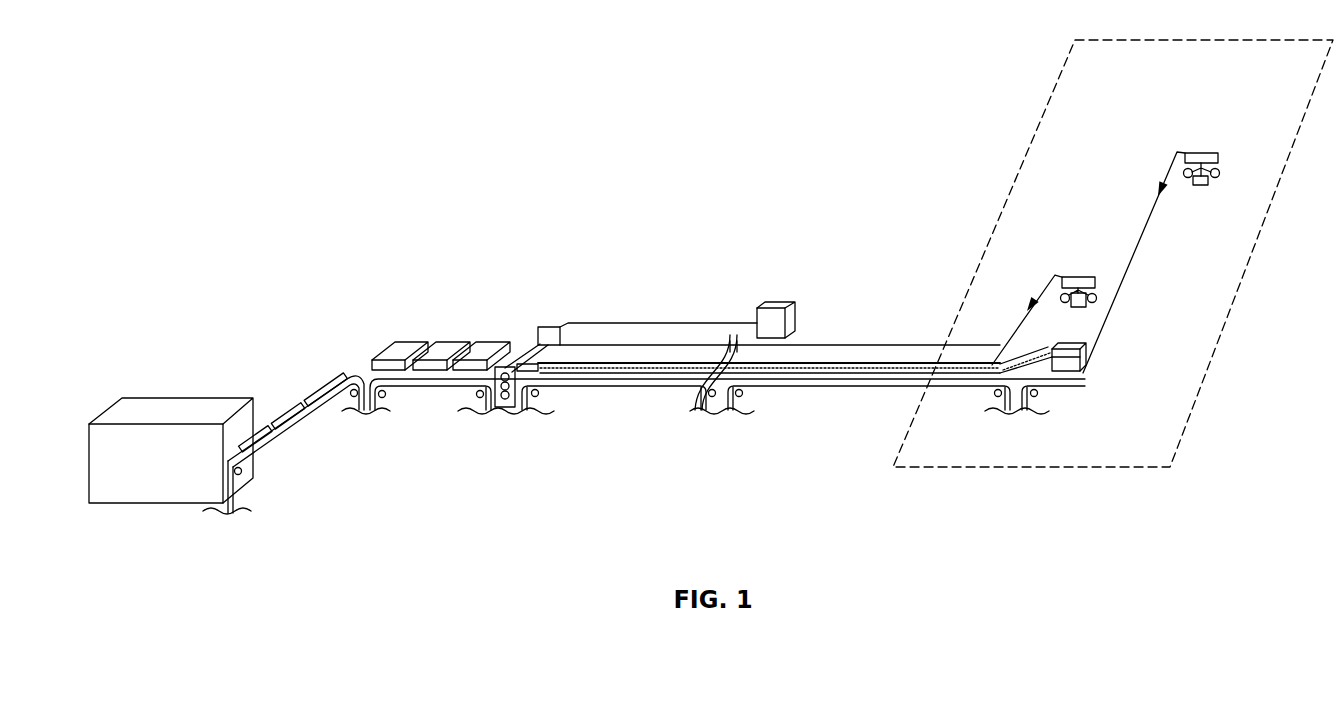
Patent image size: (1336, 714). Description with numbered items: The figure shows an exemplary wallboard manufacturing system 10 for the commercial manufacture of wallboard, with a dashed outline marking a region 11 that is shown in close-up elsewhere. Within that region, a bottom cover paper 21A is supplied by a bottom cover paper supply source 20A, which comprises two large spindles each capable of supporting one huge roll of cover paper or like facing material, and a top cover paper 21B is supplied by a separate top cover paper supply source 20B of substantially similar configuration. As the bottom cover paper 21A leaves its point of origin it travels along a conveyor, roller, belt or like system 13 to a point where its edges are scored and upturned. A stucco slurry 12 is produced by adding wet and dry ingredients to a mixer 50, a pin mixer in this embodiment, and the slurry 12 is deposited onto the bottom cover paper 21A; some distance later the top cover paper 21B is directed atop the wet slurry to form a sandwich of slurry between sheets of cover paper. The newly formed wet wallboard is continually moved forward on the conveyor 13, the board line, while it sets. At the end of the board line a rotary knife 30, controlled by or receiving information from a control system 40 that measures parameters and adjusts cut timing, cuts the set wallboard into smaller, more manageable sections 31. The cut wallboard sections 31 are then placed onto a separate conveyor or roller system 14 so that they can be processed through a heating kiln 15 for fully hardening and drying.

The wallboard manufacturing system 10 is at (231, 88).
The region 11 is at (1080, 468).
The stucco slurry 12 is at (1027, 366).
The conveyor 13 is at (849, 361).
The separate conveyor or roller system 14 is at (303, 418).
The heating kiln 15 is at (98, 465).
The bottom cover paper supply source 20A is at (1210, 186).
The top cover paper supply source 20B is at (1083, 277).
The bottom cover paper 21A is at (1133, 268).
The top cover paper 21B is at (1043, 283).
The rotary knife 30 is at (548, 327).
The wallboard sections 31 is at (318, 384).
The control system 40 is at (772, 308).
The mixer 50 is at (1081, 355).